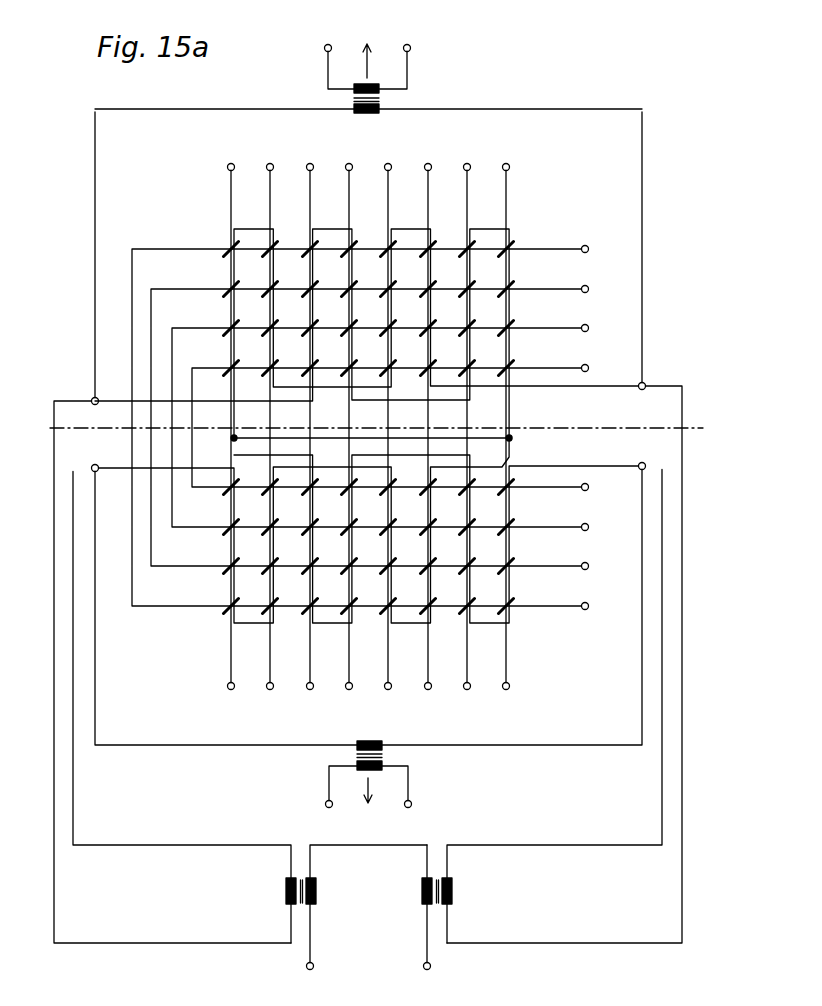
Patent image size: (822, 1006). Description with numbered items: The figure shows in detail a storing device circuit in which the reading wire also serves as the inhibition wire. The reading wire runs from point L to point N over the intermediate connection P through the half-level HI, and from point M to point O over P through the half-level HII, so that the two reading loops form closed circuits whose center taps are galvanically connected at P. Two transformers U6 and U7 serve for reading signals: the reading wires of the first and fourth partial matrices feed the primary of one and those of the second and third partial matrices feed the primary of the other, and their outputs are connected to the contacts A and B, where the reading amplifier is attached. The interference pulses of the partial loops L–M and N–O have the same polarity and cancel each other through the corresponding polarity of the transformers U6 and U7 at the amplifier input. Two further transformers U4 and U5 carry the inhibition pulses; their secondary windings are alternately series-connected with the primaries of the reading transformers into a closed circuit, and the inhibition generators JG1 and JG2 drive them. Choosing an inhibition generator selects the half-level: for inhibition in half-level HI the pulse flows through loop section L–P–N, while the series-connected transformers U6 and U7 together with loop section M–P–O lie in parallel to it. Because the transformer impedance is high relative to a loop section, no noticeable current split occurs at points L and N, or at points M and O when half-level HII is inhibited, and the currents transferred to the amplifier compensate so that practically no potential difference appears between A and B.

The half-level HI is at (383, 276).
The half-level HII is at (379, 664).
The point L is at (94, 413).
The point N is at (641, 398).
The point M is at (93, 459).
The point O is at (642, 457).
The intermediate connection P is at (376, 416).
The transformer U4 is at (368, 110).
The transformer U5 is at (368, 620).
The transformer U6 is at (250, 717).
The transformer U7 is at (542, 716).
The pulse generator JG1 is at (368, 52).
The pulse generator JG2 is at (369, 802).
The contact A is at (308, 978).
The contact B is at (426, 978).